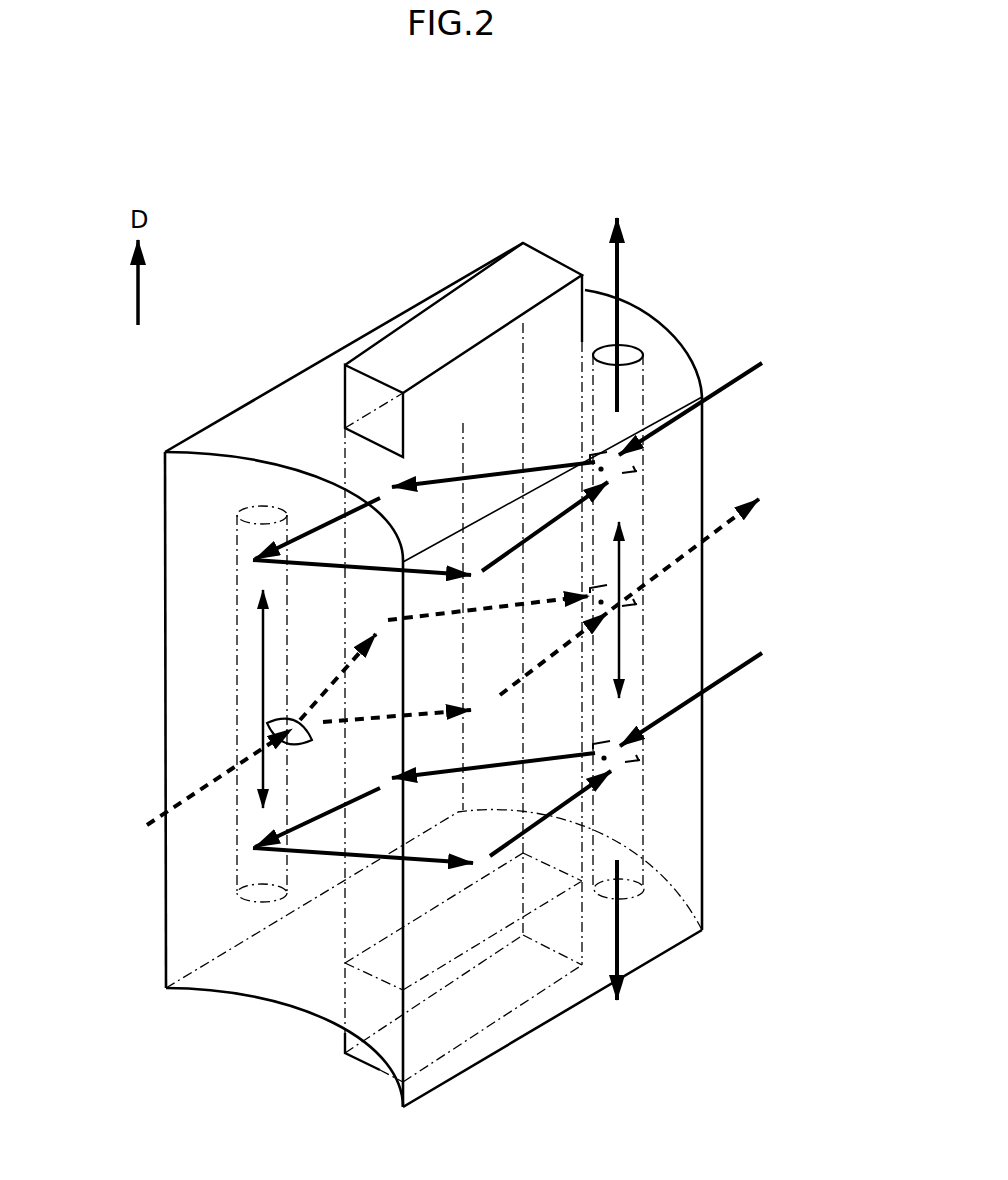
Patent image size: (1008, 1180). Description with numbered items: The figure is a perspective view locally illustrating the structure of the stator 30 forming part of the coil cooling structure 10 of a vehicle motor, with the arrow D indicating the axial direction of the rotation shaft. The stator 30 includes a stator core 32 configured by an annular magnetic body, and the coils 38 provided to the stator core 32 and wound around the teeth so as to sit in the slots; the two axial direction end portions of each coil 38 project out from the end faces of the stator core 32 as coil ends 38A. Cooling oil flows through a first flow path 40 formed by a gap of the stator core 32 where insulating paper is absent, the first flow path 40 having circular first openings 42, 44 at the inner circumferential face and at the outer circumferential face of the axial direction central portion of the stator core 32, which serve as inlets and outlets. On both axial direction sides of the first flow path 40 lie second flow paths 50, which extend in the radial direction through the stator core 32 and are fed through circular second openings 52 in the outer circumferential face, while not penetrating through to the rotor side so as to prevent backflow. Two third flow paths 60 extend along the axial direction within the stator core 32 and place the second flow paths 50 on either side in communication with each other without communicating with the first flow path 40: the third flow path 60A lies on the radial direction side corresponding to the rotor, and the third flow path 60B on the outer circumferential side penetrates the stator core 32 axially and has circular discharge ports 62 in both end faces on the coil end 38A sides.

The coil cooling structure 10 is at (725, 242).
The stator 30 is at (290, 370).
The stator core 32 is at (265, 413).
The coil 38 is at (345, 917).
The coil end 38A is at (527, 262).
The first flow path 40 is at (513, 693).
The first opening 42 is at (267, 733).
The first opening 44 is at (627, 612).
The second flow path 50 is at (575, 515).
The second opening 52 is at (623, 475).
The third flow path 60 is at (462, 709).
The third flow path 60A is at (235, 831).
The third flow path 60B is at (645, 630).
The discharge port 62 is at (637, 352).